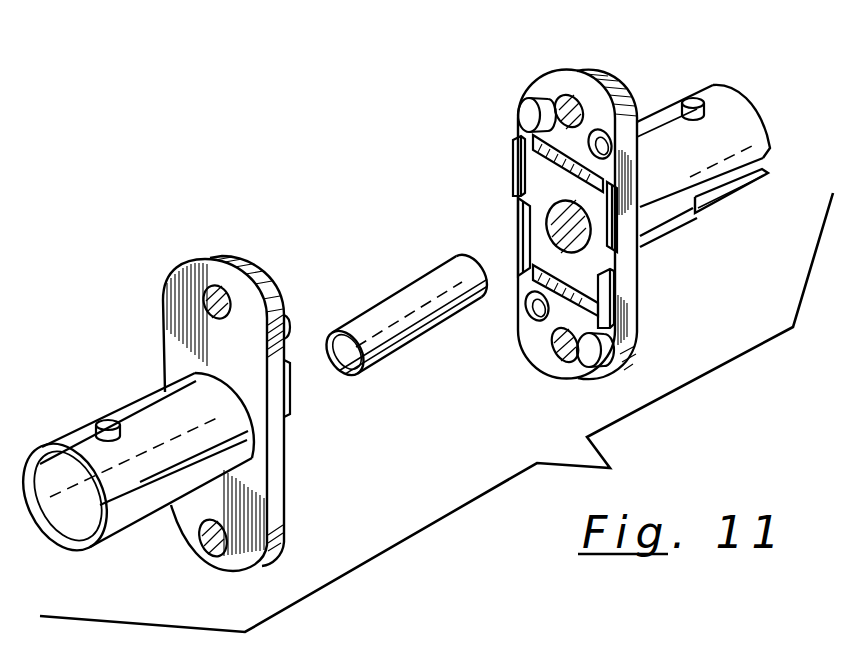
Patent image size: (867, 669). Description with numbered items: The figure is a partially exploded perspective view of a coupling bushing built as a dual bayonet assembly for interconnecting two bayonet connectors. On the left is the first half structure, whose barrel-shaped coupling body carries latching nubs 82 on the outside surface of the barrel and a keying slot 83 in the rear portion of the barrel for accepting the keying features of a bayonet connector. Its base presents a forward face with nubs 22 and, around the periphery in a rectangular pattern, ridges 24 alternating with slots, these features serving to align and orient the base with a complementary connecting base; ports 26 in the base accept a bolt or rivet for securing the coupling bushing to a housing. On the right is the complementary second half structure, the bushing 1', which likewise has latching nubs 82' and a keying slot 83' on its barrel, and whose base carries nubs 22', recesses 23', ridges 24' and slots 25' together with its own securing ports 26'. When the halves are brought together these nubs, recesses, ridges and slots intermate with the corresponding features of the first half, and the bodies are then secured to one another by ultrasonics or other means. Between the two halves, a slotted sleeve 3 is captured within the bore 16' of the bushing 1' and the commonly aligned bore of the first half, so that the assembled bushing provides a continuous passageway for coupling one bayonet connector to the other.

The bushing 1' is at (577, 196).
The slotted sleeve 3 is at (399, 280).
The bore 16' is at (568, 225).
The nubs 22 is at (304, 309).
The nubs 22' is at (532, 263).
The recesses 23' is at (561, 221).
The ridges 24 is at (317, 392).
The ridges 24' is at (575, 232).
The slots 25' is at (570, 233).
The ports 26 is at (206, 403).
The ports 26' is at (544, 225).
The latching nubs 82 is at (94, 401).
The latching nubs 82' is at (689, 68).
The keying slot 83 is at (130, 468).
The keying slot 83' is at (731, 166).